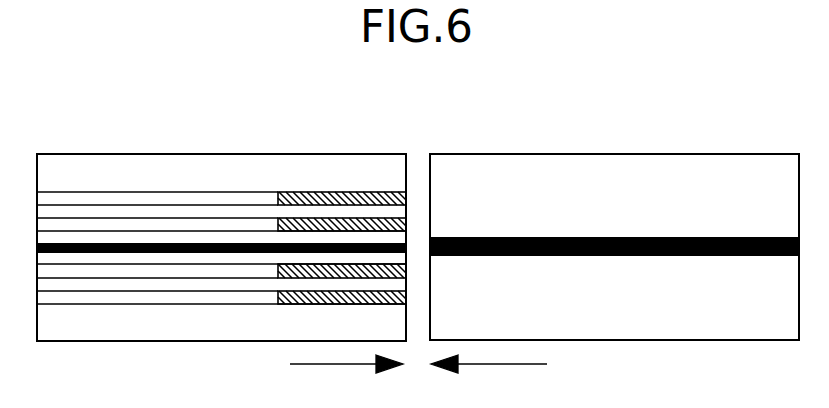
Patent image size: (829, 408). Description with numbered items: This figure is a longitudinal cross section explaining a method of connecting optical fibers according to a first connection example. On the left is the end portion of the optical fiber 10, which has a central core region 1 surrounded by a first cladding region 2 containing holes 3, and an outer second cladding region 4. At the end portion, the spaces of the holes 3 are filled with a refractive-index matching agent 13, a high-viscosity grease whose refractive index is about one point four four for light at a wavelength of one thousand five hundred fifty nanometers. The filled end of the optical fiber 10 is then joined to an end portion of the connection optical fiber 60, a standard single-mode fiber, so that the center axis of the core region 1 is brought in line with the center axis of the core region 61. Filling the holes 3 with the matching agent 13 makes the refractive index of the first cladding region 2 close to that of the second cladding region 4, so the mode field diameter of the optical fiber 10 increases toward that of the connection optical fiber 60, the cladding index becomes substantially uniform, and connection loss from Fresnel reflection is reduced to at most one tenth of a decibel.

The core region 1 is at (257, 242).
The first cladding region 2 is at (170, 212).
The holes 3 is at (145, 192).
The second cladding region 4 is at (287, 173).
The optical fiber 10 is at (208, 155).
The refractive-index matching agent 13 is at (345, 192).
The connection optical fiber 60 is at (682, 153).
The core region 61 is at (560, 237).